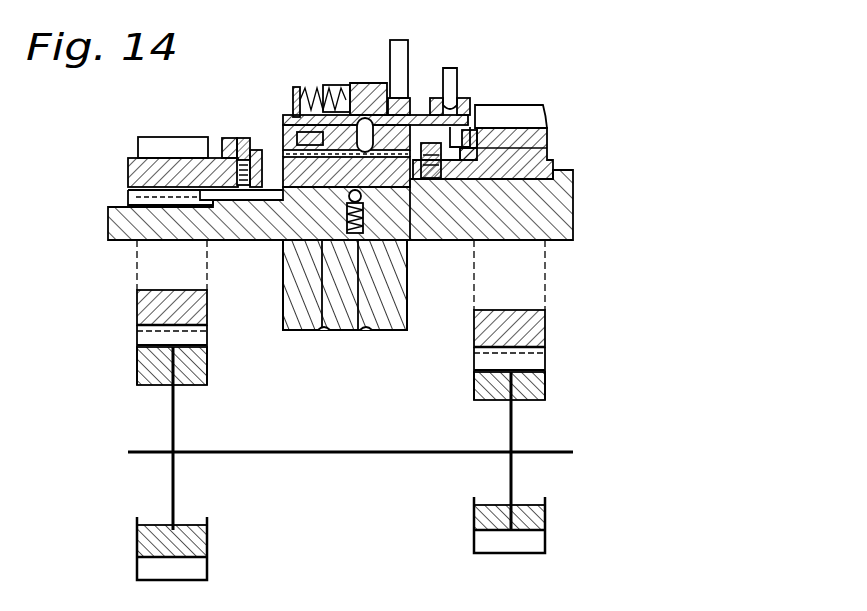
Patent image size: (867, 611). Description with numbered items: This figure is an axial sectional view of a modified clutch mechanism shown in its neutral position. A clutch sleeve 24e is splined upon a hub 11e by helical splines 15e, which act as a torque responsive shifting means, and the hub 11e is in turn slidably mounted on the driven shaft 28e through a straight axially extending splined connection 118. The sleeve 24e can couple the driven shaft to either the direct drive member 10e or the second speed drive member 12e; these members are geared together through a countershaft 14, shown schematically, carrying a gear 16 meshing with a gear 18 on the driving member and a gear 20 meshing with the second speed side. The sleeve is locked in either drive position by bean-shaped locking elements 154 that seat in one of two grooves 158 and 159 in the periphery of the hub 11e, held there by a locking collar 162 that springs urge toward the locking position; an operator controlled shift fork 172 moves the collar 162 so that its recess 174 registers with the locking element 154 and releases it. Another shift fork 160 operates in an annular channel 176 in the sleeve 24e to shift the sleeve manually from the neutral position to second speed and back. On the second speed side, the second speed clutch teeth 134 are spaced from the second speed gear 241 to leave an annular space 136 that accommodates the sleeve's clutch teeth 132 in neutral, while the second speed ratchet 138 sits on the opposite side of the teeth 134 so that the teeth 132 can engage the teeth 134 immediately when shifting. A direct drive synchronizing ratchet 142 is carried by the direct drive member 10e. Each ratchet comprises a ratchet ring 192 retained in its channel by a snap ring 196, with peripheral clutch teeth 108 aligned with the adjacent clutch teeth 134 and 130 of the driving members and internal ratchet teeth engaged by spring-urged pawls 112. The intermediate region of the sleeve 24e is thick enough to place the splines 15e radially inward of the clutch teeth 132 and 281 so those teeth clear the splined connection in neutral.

The direct drive member 10e is at (137, 176).
The hub 11e is at (347, 100).
The second speed drive member 12e is at (546, 160).
The countershaft 14 is at (362, 452).
The helical splines 15e is at (300, 318).
The gear 16 is at (252, 90).
The gear 18 is at (146, 140).
The gear 20 is at (535, 383).
The clutch sleeve 24e is at (405, 114).
The driven shaft 28e is at (573, 203).
The peripheral clutch teeth 108 is at (244, 137).
The pawls 112 is at (237, 163).
The splined connection 118 is at (275, 192).
The clutch teeth 130 is at (230, 138).
The clutch teeth 132 is at (548, 131).
The second speed clutch teeth 134 is at (478, 135).
The annular space 136 is at (548, 146).
The second speed ratchet 138 is at (434, 188).
The direct drive synchronizing ratchet 142 is at (242, 187).
The locking elements 154 is at (360, 100).
The groove 158 is at (366, 330).
The groove 159 is at (327, 333).
The shift fork 160 is at (452, 70).
The locking collar 162 is at (336, 98).
The shift fork 172 is at (404, 52).
The recess 174 is at (379, 97).
The annular channel 176 is at (458, 100).
The ratchet ring 192 is at (240, 160).
The snap ring 196 is at (257, 152).
The second speed gear 241 is at (537, 108).
The clutch teeth 281 is at (283, 116).